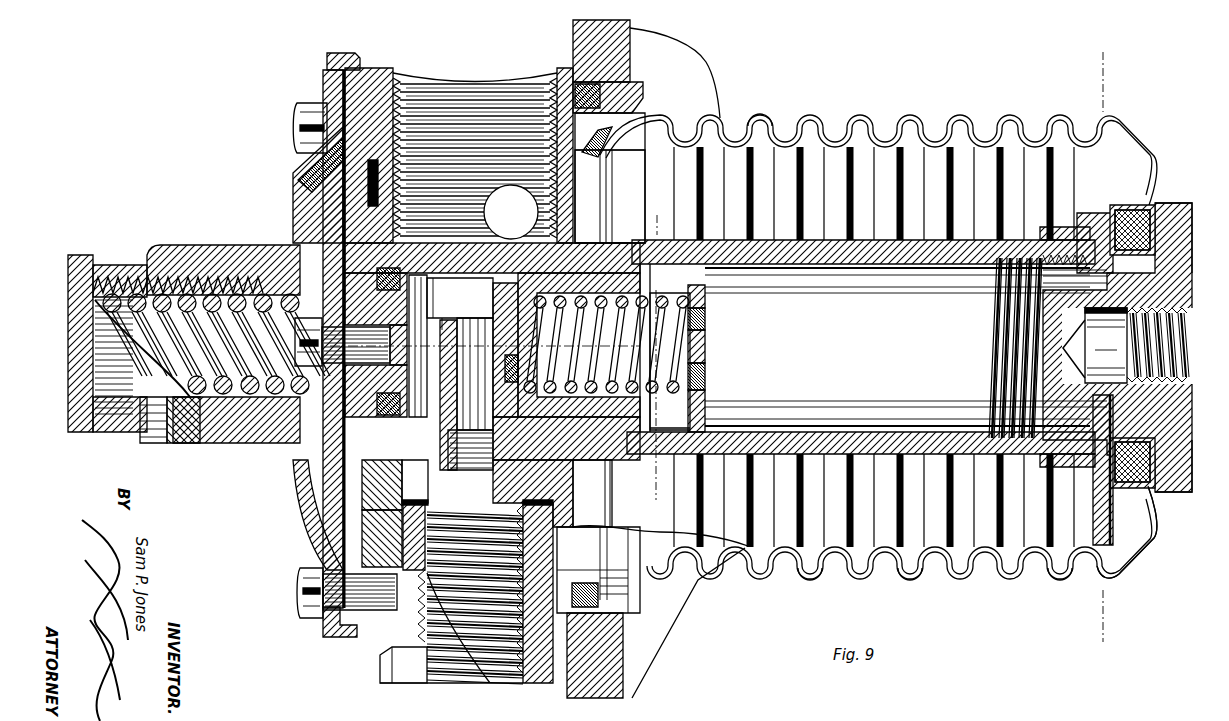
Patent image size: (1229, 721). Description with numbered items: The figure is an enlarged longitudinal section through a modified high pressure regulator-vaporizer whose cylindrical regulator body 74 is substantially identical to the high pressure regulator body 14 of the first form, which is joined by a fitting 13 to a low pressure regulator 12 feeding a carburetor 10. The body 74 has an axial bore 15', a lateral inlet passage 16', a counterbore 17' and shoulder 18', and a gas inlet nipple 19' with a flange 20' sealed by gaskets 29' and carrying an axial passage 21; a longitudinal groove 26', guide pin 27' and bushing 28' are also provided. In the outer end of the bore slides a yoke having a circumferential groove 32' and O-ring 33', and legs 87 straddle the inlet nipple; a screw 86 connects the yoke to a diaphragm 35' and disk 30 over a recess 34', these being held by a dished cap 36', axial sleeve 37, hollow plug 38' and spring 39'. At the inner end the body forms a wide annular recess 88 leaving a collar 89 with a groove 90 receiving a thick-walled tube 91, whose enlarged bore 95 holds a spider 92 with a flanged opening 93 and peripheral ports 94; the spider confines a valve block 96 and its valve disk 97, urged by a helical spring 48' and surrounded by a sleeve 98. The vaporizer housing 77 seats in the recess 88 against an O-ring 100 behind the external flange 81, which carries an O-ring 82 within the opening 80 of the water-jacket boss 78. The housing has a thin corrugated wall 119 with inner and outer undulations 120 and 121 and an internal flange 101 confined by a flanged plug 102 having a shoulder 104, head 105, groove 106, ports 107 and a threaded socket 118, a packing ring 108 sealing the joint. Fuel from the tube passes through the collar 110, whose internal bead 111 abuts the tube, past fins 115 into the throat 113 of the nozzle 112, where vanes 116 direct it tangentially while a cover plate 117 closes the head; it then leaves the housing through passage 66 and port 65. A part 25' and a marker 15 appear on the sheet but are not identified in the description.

The gas carburetor 10 is at (1076, 72).
The low pressure regulator 12 is at (676, 228).
The fitting 13 is at (592, 262).
The high pressure regulator body 14 is at (397, 357).
The section line 15- 15 is at (514, 199).
The axial bore 15' is at (624, 468).
The lateral inlet passage 16' is at (470, 443).
The counterbore 17' is at (382, 538).
The shoulder 18' is at (533, 489).
The gas inlet nipple 19' is at (460, 304).
The flange 20' is at (503, 577).
The axial passage 21 is at (458, 404).
The cylinder wall 25' is at (494, 350).
The longitudinal groove 26' is at (430, 346).
The guide pin 27' is at (395, 485).
The bushing 28' is at (381, 665).
The gaskets 29' is at (510, 588).
The disk 30 is at (300, 478).
The circumferential groove 32' is at (376, 391).
The O-ring 33' is at (492, 264).
The concentric recess 34' is at (336, 585).
The diaphragm 35' is at (313, 335).
The dished cap 36' is at (325, 53).
The axial sleeve 37 is at (190, 443).
The hollow plug 38' is at (124, 323).
The spring 39' is at (196, 267).
The helical spring 48' is at (906, 347).
The radial screw-threaded passage 65 is at (472, 73).
The longitudinal passage 66 is at (600, 178).
The regulator body 74 is at (374, 70).
The vaporizer housing 77 is at (912, 110).
The boss 78 is at (684, 50).
The circular opening 80 is at (624, 622).
The external flange 81 is at (636, 94).
The O-ring 82 is at (562, 70).
The screw 86 is at (345, 318).
The legs 87 is at (526, 236).
The annular coaxial recess 88 is at (602, 208).
The annular collar 89 is at (645, 426).
The concentric groove 90 is at (676, 410).
The thick-walled tube 91 is at (816, 432).
The spider 92 is at (706, 310).
The axial inwardly-flanged opening 93 is at (706, 342).
The peripheral ports 94 is at (706, 385).
The enlarged bore portion 95 is at (706, 418).
The valve block 96 is at (518, 298).
The valve disk 97 is at (504, 378).
The sleeve 98 is at (640, 268).
The O-ring 100 is at (620, 144).
The internal radial flange 101 is at (1138, 204).
The flanged plug 102 is at (1178, 203).
The annular shoulder 104 is at (1128, 258).
The plug head 105 is at (1172, 492).
The circumferential groove 106 is at (1127, 372).
The axially-extending ports 107 is at (1035, 300).
The packing ring 108 is at (1165, 505).
The annular collar 110 is at (1048, 228).
The internal bead 111 is at (1092, 214).
The transverse nozzle 112 is at (1058, 580).
The throat 113 is at (1112, 514).
The fins 115 is at (1128, 438).
The arcuate vanes 116 is at (1092, 576).
The cover plate 117 is at (1112, 538).
The screw-threaded socket 118 is at (1126, 350).
The corrugated wall 119 is at (760, 115).
The inner corrugations 120 is at (808, 578).
The outer corrugations 121 is at (915, 582).